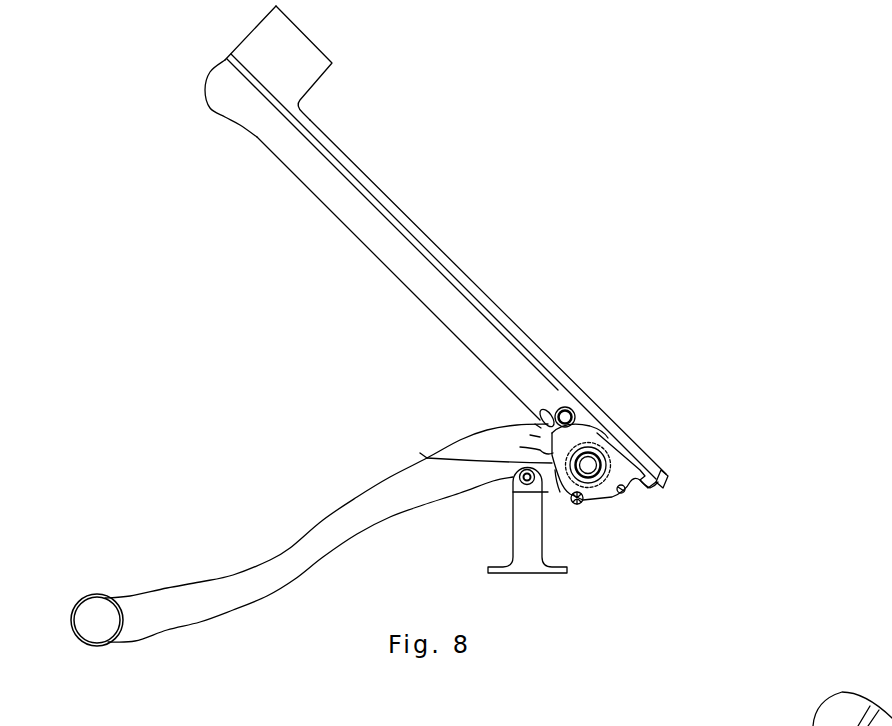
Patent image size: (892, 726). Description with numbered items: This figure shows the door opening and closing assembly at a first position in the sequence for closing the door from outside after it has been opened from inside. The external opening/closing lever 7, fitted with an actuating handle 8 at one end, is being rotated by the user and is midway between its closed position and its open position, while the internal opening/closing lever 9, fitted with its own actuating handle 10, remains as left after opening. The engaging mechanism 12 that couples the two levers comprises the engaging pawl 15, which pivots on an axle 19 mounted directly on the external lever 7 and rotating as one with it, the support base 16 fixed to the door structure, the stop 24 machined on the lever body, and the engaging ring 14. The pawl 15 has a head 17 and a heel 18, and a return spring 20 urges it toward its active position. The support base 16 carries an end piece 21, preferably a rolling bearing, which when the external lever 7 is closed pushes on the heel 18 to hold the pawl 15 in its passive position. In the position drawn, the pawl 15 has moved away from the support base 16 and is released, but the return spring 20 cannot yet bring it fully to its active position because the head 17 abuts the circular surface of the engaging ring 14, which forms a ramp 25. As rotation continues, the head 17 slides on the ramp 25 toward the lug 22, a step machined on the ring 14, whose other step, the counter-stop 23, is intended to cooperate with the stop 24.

The external opening/closing lever 7 is at (394, 203).
The actuating handle 8 is at (305, 45).
The internal opening/closing lever 9 is at (307, 555).
The actuating handle 10 is at (92, 630).
The engaging mechanism 12 is at (633, 417).
The engaging ring 14 is at (560, 478).
The engaging pawl 15 is at (540, 436).
The support base 16 is at (527, 553).
The head 17 is at (540, 452).
The heel 18 is at (541, 428).
The axle 19 is at (550, 410).
The return spring 20 is at (565, 407).
The end piece 21 is at (519, 476).
The lug 22 is at (592, 413).
The counter-stop 23 is at (578, 504).
The stop 24 is at (657, 472).
The ramp 25 is at (427, 458).